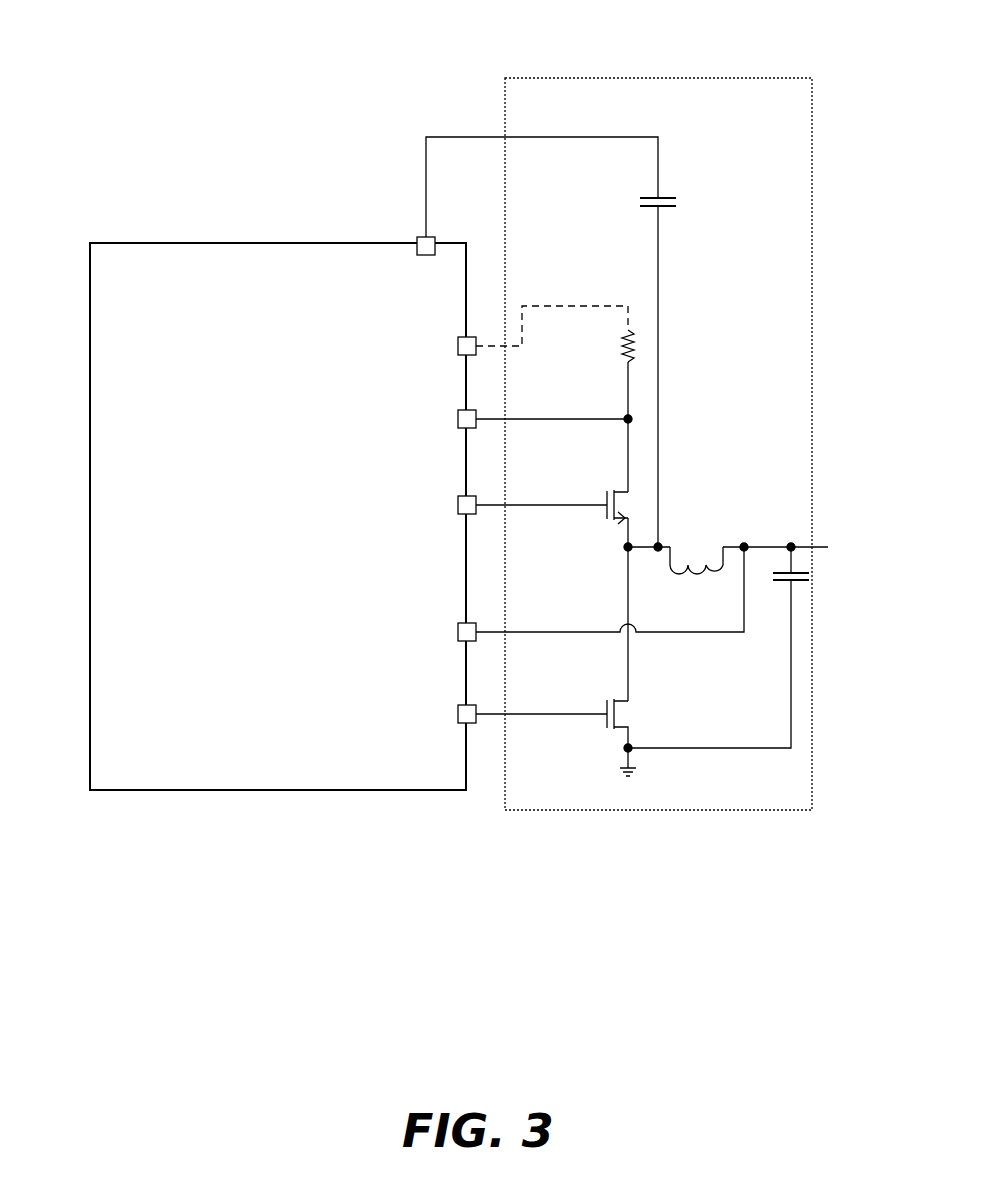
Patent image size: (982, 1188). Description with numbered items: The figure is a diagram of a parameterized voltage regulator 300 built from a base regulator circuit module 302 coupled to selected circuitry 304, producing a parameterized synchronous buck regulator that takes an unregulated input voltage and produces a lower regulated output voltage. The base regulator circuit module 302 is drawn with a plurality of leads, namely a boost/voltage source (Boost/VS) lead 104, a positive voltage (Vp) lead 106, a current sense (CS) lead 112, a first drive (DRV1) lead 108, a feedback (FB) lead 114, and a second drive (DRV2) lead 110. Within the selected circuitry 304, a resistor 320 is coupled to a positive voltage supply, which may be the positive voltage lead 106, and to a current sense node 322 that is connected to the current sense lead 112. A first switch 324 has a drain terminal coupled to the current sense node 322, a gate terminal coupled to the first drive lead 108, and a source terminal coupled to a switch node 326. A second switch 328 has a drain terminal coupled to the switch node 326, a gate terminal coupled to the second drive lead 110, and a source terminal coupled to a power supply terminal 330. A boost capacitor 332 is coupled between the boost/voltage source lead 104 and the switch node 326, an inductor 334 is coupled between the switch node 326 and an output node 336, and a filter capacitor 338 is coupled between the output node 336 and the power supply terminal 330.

The parameterized voltage regulator 300 is at (110, 64).
The base regulator circuit module 302 is at (145, 243).
The selected circuitry 304 is at (655, 78).
The boost/voltage source (Boost/VS) lead 104 is at (420, 240).
The positive voltage (Vp) lead 106 is at (458, 340).
The current sense (CS) lead 112 is at (458, 413).
The first drive (DRV1) lead 108 is at (458, 500).
The feedback (FB) lead 114 is at (458, 626).
The second drive (DRV2) lead 110 is at (458, 707).
The resistor 320 is at (636, 340).
The current sense node 322 is at (633, 414).
The first switch 324 is at (592, 470).
The switch node 326 is at (628, 548).
The second switch 328 is at (652, 710).
The power supply terminal 330 is at (622, 769).
The boost capacitor 332 is at (672, 196).
The inductor 334 is at (688, 570).
The output node 336 is at (796, 545).
The filter capacitor 338 is at (806, 582).